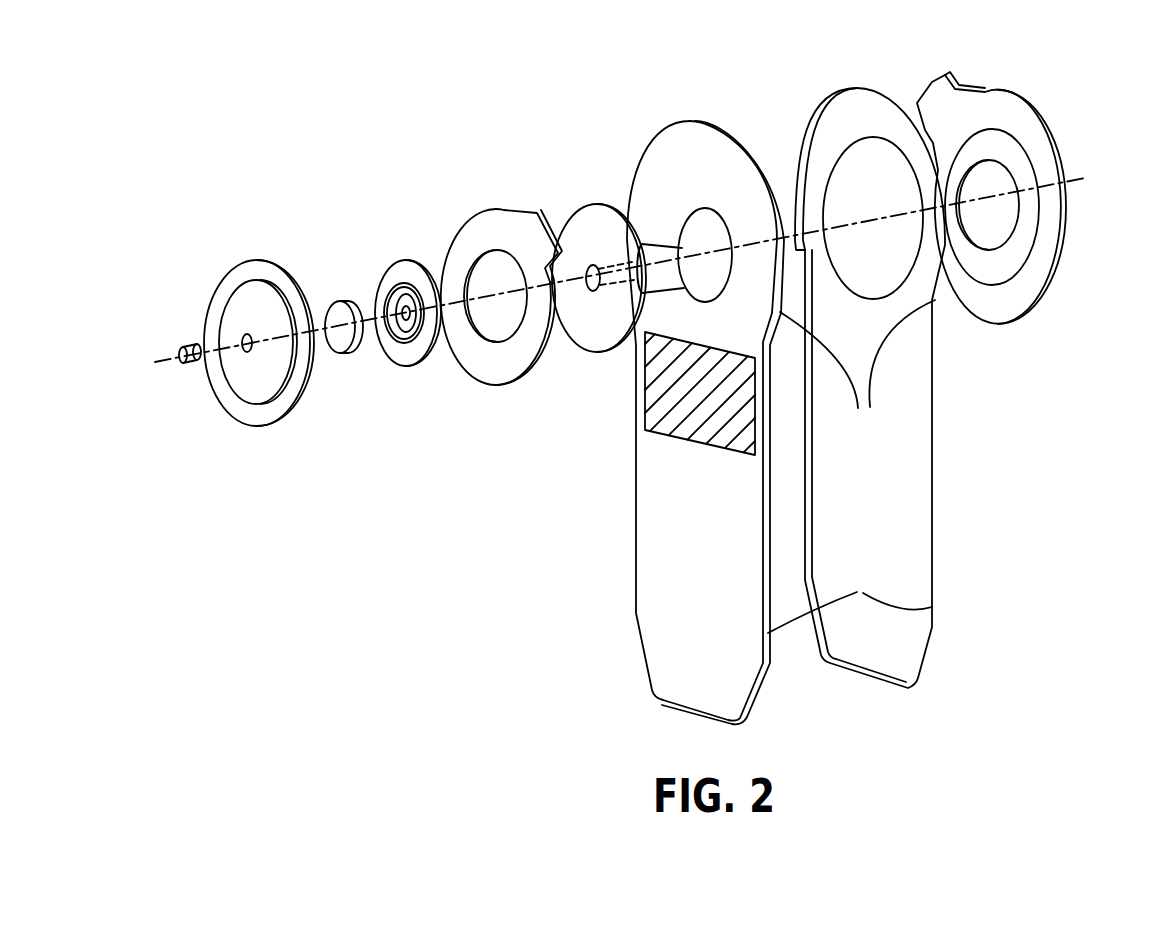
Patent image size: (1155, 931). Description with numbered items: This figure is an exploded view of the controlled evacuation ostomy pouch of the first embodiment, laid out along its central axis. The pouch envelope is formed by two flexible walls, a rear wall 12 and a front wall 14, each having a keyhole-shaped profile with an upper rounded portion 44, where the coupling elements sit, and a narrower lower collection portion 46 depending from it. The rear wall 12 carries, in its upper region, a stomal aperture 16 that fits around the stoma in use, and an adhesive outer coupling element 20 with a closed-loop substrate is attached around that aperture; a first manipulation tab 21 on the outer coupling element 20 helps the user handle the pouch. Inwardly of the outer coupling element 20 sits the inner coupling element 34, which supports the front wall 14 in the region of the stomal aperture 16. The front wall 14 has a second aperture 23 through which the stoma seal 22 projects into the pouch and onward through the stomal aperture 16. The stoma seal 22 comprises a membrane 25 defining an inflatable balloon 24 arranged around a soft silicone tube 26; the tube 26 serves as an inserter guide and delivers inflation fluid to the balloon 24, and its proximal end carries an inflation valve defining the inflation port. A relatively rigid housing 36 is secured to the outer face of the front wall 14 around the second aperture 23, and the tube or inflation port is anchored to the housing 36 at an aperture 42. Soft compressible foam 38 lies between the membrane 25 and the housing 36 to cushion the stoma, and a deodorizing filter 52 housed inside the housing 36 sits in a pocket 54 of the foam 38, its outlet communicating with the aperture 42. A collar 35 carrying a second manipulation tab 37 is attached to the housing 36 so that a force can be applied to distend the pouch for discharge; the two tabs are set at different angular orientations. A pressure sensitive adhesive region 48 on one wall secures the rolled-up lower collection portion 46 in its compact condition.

The rear wall 12 is at (912, 528).
The front wall 14 is at (668, 132).
The stomal aperture 16 is at (840, 147).
The outer coupling element 20 is at (1010, 115).
The first manipulation tab 21 is at (932, 95).
The stoma seal 22 is at (599, 166).
The second aperture 23 is at (712, 213).
The inflatable balloon 24 is at (648, 240).
The membrane 25 is at (574, 207).
The tube 26 is at (618, 283).
The inner coupling element 34 is at (1028, 210).
The collar 35 is at (456, 231).
The housing 36 is at (245, 262).
The second manipulation tab 37 is at (528, 213).
The foam 38 is at (390, 265).
The aperture 42 is at (245, 338).
The upper rounded portion 44 is at (857, 371).
The lower collection portion 46 is at (850, 598).
The pressure sensitive adhesive region 48 is at (664, 442).
The deodorizing filter 52 is at (344, 352).
The pocket 54 is at (405, 327).